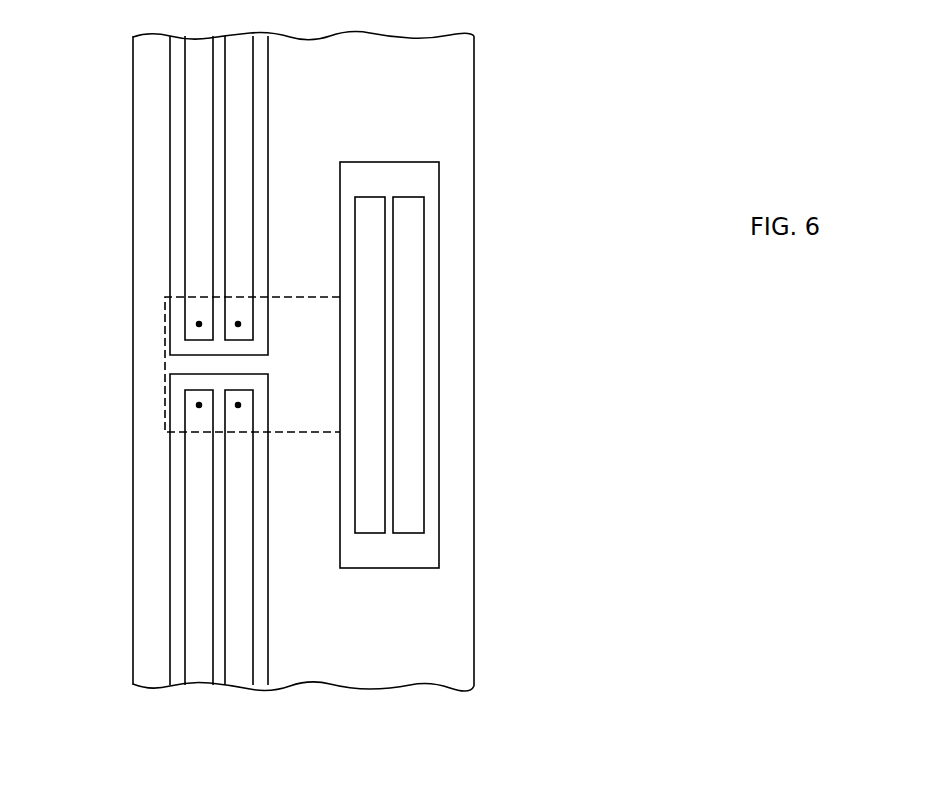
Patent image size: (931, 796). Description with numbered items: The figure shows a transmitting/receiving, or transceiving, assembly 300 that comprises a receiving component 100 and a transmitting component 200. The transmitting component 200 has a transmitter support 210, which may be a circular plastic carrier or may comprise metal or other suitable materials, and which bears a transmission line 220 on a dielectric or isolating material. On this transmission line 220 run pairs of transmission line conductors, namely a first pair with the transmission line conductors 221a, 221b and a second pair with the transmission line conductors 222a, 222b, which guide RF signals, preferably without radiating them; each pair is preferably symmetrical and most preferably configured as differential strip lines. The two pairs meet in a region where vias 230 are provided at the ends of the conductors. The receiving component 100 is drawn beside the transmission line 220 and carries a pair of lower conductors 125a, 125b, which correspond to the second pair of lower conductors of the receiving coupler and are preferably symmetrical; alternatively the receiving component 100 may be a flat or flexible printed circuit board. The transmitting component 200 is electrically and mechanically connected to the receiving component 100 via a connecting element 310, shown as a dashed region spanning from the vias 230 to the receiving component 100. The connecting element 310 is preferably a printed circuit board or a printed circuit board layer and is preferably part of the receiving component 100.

The receiving component 100 is at (314, 386).
The transmitter support 210 is at (432, 623).
The transmitting component 200 is at (199, 360).
The transmission line 220 is at (268, 660).
The transmission line conductor 221a is at (202, 623).
The transmission line conductor 221b is at (238, 623).
The transmission line conductor 222a is at (203, 78).
The transmission line conductor 222b is at (238, 80).
The vias 230 is at (199, 324).
The connecting element 310 is at (330, 382).
The lower conductor 125a is at (370, 208).
The lower conductor 125b is at (408, 208).
The transmitting/receiving assembly 300 is at (394, 420).